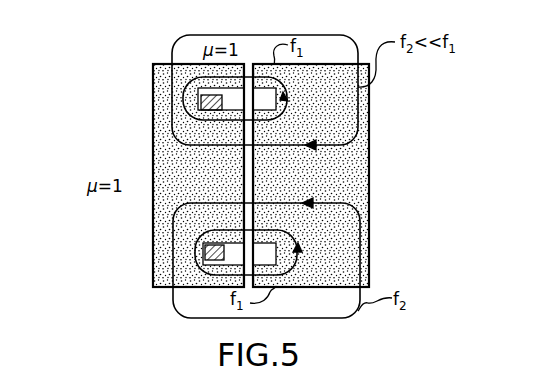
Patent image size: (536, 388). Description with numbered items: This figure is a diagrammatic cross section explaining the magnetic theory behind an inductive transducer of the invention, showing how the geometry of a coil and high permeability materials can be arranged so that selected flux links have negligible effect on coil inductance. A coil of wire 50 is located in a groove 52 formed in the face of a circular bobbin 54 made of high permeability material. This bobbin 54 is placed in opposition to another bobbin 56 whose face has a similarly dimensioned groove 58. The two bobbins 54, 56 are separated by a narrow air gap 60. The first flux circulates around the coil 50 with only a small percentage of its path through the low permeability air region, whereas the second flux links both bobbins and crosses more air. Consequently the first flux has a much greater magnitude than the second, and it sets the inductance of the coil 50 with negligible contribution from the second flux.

The coil of wire 50 is at (201, 100).
The groove 52 is at (227, 266).
The circular bobbin 54 is at (153, 139).
The bobbin 56 is at (369, 167).
The groove 58 is at (276, 256).
The air gap 60 is at (253, 177).